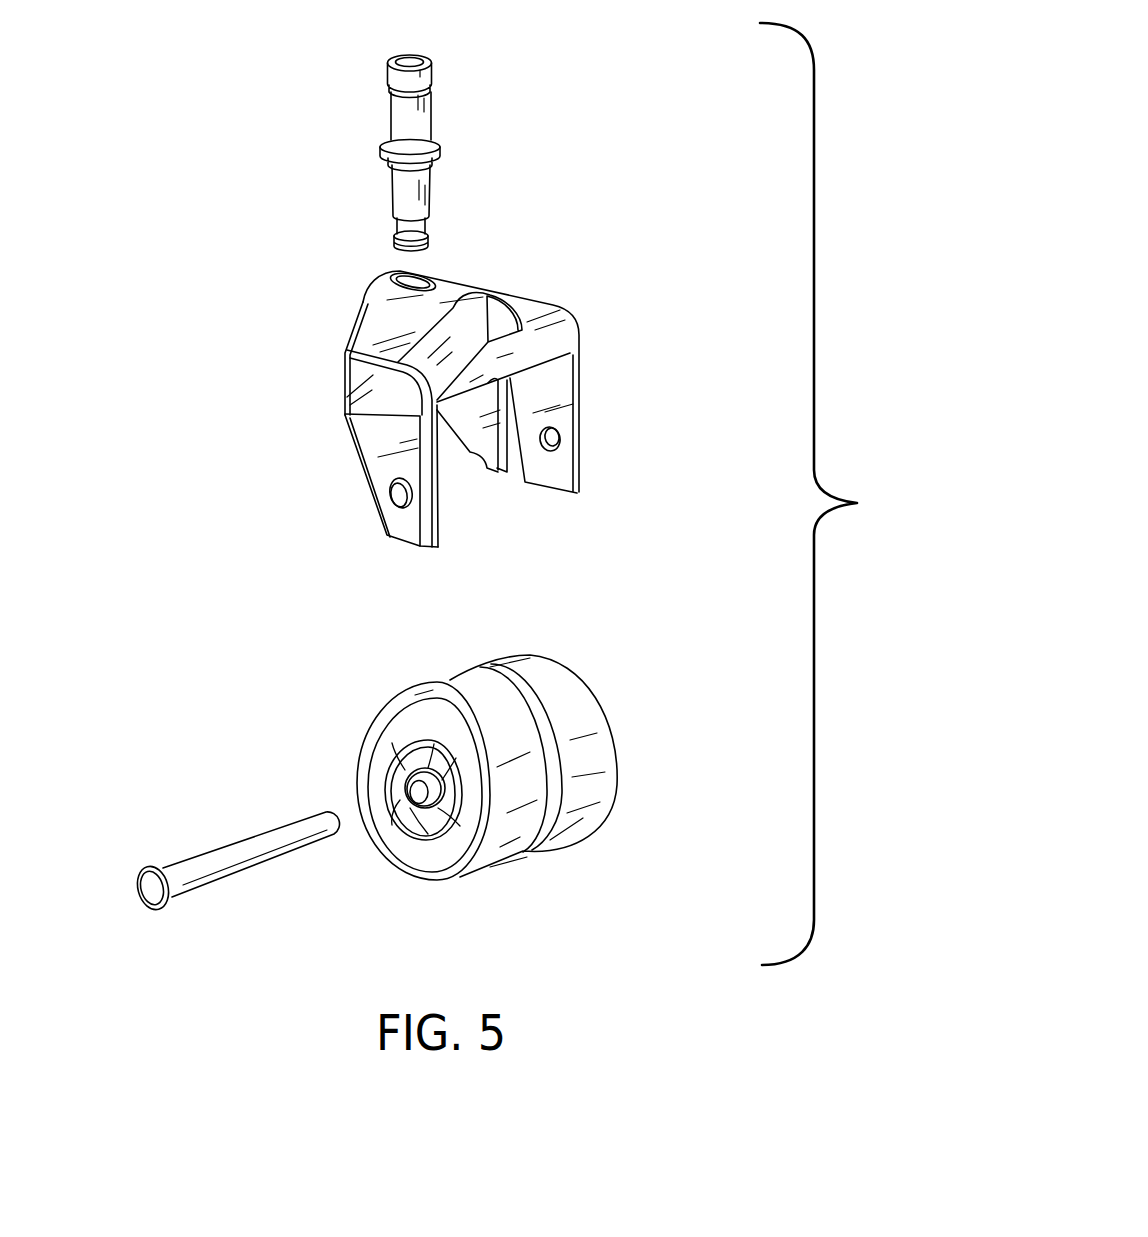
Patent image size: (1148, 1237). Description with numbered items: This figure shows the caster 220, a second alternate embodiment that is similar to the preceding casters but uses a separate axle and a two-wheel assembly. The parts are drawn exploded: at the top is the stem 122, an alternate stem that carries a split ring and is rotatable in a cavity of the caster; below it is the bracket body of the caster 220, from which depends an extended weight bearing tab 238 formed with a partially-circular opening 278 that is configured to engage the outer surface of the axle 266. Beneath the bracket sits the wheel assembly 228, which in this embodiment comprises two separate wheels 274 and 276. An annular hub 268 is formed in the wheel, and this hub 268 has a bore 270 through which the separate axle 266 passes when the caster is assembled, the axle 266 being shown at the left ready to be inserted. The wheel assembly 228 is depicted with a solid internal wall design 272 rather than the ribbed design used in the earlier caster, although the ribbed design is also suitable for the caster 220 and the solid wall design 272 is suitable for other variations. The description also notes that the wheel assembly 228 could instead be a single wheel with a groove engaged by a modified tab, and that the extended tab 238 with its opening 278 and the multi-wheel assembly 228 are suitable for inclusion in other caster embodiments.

The stem 122 is at (410, 117).
The caster 220 is at (486, 373).
The extended weight bearing tab 238 is at (475, 430).
The partially-circular opening 278 is at (481, 470).
The wheel assembly 228 is at (507, 760).
The wheel 274 is at (443, 698).
The solid internal wall design 272 is at (430, 756).
The annular hub 268 is at (403, 775).
The bore 270 is at (400, 803).
The wheel 276 is at (590, 745).
The axle 266 is at (245, 857).